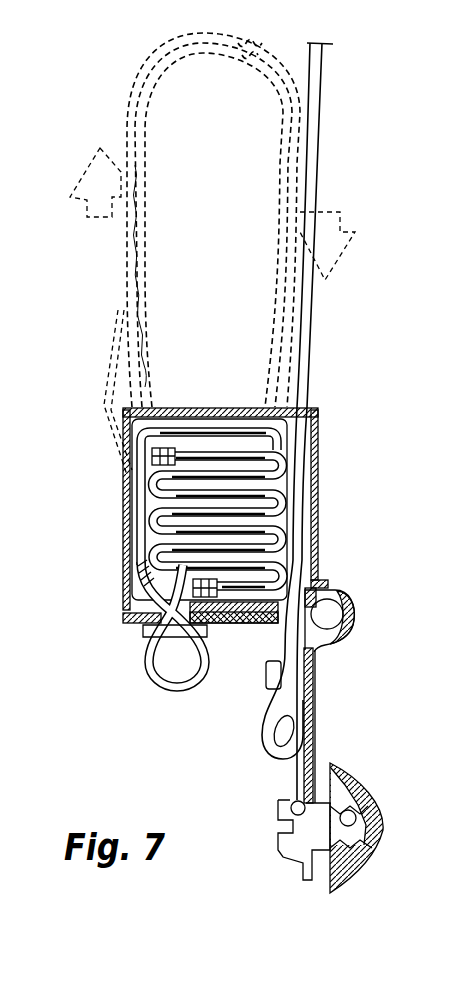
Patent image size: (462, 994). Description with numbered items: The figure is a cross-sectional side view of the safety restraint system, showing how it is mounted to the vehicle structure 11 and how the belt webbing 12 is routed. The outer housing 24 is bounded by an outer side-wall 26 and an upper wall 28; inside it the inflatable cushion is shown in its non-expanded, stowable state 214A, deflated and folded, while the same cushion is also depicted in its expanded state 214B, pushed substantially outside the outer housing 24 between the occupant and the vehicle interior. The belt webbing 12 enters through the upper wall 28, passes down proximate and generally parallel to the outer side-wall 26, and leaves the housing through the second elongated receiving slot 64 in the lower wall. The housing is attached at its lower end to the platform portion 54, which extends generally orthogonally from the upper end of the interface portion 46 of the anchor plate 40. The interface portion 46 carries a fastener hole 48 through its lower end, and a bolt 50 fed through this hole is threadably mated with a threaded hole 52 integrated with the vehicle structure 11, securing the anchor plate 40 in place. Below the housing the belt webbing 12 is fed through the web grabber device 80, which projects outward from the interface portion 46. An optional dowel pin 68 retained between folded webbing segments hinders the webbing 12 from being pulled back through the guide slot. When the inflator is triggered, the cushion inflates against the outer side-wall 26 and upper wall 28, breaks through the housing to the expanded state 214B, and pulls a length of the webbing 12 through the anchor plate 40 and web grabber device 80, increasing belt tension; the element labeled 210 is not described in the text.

The vehicle structure 11 is at (367, 812).
The belt webbing 12 is at (306, 344).
The outer housing 24 is at (164, 405).
The outer side-wall 26 is at (122, 547).
The upper wall 28 is at (244, 407).
The anchor plate 40 is at (349, 602).
The interface portion 46 is at (314, 700).
The fastener hole 48 is at (296, 801).
The bolt 50 is at (279, 848).
The threaded hole 52 is at (350, 811).
The platform portion 54 is at (239, 624).
The second elongated receiving slot 64 is at (337, 632).
The dowel pin 68 is at (166, 663).
The web grabber device 80 is at (254, 737).
The phantom arrow 210 is at (348, 221).
The non-expanded, stowable state 214A is at (134, 432).
The expanded state 214B is at (118, 249).